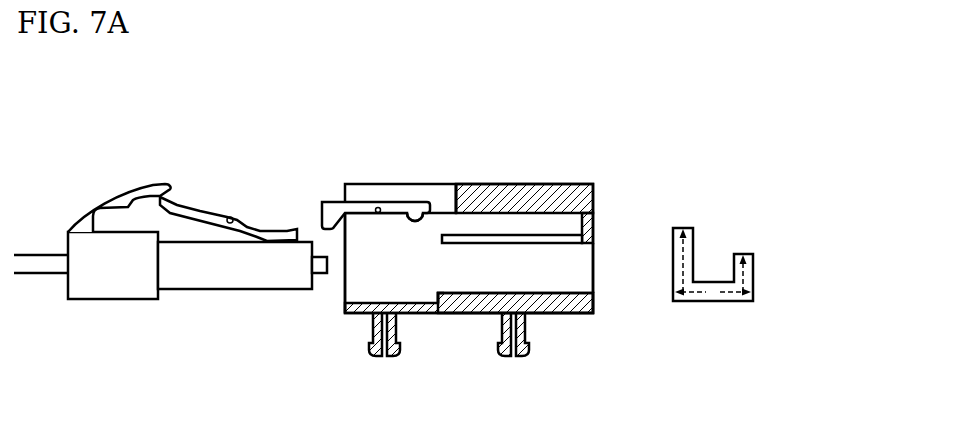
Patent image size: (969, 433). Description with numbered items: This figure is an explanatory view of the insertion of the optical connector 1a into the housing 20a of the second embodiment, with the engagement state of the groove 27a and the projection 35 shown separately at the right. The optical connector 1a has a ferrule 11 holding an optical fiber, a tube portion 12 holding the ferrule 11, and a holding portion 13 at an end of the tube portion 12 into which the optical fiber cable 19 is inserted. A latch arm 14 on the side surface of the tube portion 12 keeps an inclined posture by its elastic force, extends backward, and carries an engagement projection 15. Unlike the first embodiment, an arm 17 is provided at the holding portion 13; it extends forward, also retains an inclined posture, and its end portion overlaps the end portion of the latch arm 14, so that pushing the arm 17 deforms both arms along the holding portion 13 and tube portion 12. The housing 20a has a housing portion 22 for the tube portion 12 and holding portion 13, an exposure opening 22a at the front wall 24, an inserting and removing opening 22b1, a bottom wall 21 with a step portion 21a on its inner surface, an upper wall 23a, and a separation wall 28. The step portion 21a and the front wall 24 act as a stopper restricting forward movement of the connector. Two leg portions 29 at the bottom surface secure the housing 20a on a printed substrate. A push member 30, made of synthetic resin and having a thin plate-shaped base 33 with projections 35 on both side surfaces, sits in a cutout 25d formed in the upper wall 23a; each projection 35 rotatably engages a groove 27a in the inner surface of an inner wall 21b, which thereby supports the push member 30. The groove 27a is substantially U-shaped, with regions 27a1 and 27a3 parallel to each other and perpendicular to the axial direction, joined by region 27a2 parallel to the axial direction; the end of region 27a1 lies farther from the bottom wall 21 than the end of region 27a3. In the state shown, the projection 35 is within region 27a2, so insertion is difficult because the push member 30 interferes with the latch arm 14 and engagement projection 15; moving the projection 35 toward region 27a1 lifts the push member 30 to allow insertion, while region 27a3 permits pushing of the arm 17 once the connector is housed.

The optical connector 1a is at (148, 168).
The ferrule 11 is at (320, 257).
The tube portion 12 is at (223, 267).
The holding portion 13 is at (122, 274).
The latch arm 14 is at (245, 228).
The engagement projection 15 is at (230, 216).
The arm 17 is at (100, 207).
The optical fiber cable 19 is at (37, 255).
The housing 20a is at (597, 180).
The bottom wall 21 is at (553, 308).
The step portion 21a is at (435, 300).
The inner wall 21b is at (397, 190).
The housing portion 22 is at (563, 282).
The exposure opening 22a is at (593, 258).
The inserting and removing opening 22b1 is at (345, 272).
The upper wall 23a is at (527, 196).
The front wall 24 is at (585, 235).
The cutout 25d is at (445, 188).
The groove 27a is at (701, 226).
The region 27a1 is at (693, 249).
The region 27a2 is at (716, 299).
The region 27a3 is at (754, 270).
The separation wall 28 is at (552, 234).
The leg portions 29 is at (397, 349).
The push member 30 is at (335, 202).
The base 33 is at (413, 206).
The projection 35 is at (378, 207).